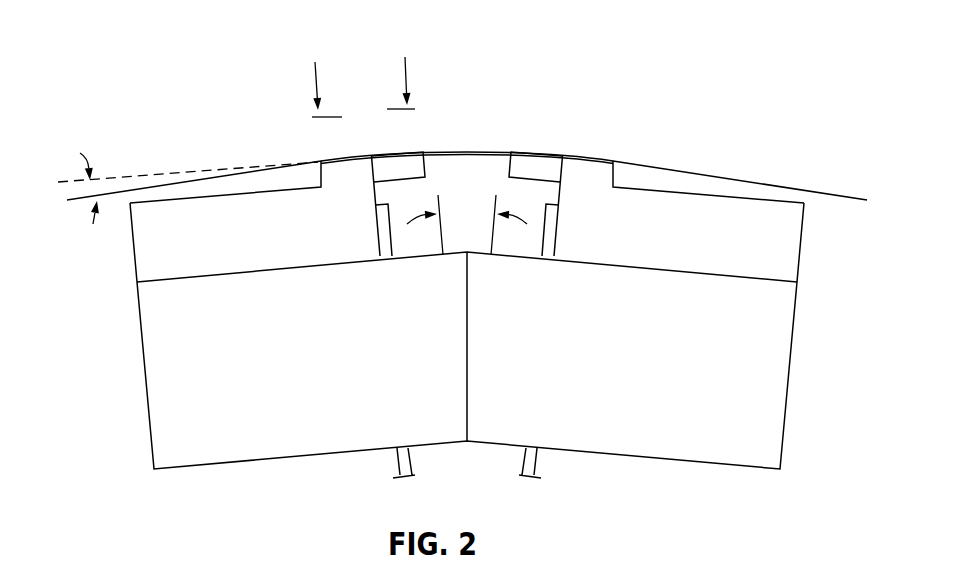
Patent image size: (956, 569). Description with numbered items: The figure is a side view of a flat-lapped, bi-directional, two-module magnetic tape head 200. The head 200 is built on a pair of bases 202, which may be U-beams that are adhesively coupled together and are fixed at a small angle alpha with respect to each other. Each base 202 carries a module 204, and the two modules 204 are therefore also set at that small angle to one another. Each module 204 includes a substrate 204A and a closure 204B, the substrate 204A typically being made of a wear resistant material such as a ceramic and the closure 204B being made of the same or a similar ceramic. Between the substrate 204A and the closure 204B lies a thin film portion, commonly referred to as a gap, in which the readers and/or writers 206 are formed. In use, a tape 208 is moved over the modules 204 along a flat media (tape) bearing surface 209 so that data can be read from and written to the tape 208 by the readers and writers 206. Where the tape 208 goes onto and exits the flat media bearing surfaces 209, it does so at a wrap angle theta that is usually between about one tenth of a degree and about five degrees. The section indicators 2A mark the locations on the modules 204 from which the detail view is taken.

The two-module magnetic tape head 200 is at (183, 111).
The base 202 is at (142, 351).
The module 204 is at (133, 248).
The substrate 204A is at (197, 226).
The closure 204B is at (511, 167).
The readers and/or writers 206 is at (373, 143).
The tape 208 is at (712, 177).
The media bearing surface 209 is at (321, 146).
The section line 2A is at (358, 69).